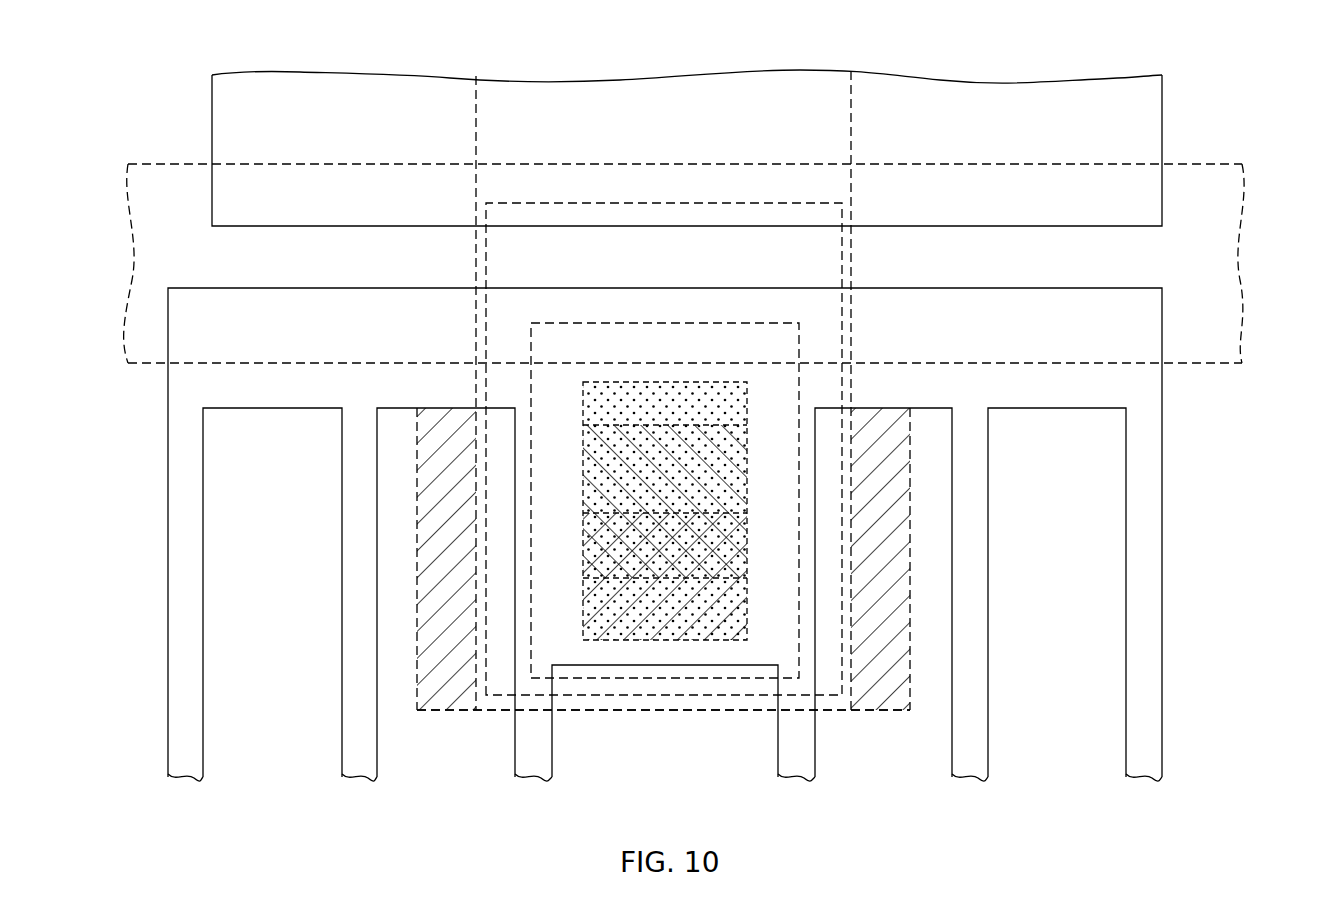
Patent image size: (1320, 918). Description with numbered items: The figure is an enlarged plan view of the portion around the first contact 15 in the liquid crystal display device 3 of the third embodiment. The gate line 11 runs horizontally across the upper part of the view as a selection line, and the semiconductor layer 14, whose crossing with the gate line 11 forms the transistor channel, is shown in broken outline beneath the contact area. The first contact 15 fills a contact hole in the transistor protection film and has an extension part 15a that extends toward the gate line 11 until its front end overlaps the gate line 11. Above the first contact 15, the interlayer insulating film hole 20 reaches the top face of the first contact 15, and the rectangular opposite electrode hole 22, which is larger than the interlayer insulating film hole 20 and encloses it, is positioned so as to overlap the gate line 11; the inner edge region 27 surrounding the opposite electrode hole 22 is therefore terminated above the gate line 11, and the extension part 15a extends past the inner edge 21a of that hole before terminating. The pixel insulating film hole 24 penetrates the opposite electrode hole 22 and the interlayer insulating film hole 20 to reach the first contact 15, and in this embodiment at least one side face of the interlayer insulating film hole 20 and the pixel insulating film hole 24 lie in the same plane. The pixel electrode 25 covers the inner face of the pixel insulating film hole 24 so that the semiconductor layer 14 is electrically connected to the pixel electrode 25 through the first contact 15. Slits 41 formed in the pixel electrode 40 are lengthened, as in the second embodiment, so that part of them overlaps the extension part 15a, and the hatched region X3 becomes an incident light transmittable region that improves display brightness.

The liquid crystal display device 3 is at (1036, 40).
The gate line 11 is at (1242, 262).
The semiconductor layer 14 is at (851, 258).
The first contact 15 is at (722, 637).
The extension part 15a is at (619, 712).
The interlayer insulating film hole 20 is at (583, 417).
The inner edge 21a is at (675, 680).
The opposite electrode hole 22 is at (800, 447).
The pixel insulating film hole 24 is at (747, 473).
The pixel electrode 25 is at (1162, 137).
The inner edge region 27 is at (655, 265).
The pixel electrode 40 is at (985, 568).
The slit 41 is at (275, 763).
The hatched region X3 is at (448, 712).